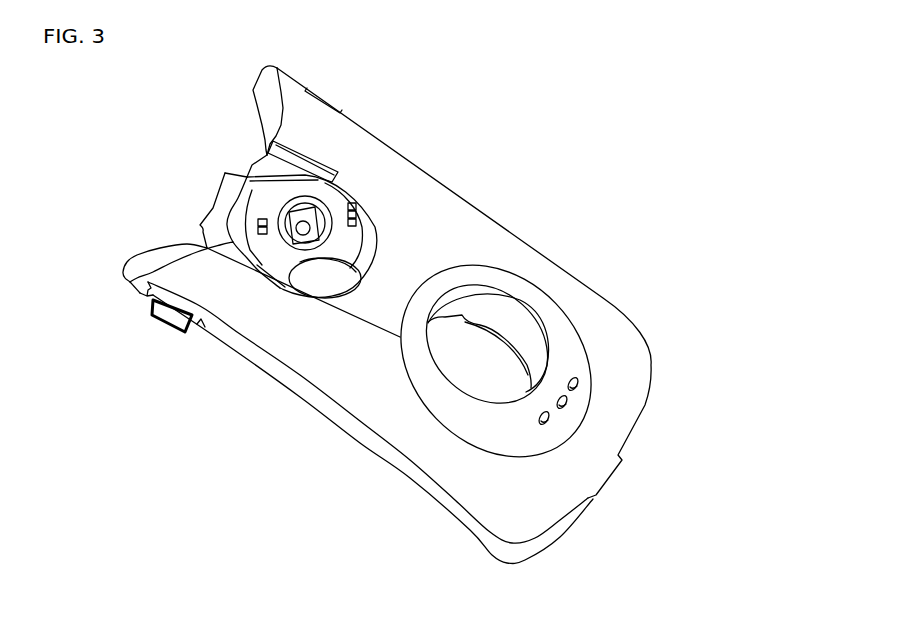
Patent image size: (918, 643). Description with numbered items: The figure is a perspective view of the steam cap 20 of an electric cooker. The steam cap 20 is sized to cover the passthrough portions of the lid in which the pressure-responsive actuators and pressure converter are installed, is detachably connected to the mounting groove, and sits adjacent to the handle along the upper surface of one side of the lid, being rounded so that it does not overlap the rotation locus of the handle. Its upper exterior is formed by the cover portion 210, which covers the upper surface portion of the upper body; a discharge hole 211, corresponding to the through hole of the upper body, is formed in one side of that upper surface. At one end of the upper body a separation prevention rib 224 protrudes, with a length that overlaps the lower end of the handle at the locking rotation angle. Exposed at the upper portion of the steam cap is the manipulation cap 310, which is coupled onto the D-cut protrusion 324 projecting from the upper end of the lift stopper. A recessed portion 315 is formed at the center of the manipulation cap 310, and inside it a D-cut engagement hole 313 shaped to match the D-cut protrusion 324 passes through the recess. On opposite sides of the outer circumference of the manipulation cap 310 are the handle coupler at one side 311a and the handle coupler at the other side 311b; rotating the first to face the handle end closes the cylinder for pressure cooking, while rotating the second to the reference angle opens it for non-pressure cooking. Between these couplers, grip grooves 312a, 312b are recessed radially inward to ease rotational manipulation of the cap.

The steam cap 20 is at (116, 101).
The cover portion 210 is at (568, 310).
The discharge hole 211 is at (577, 385).
The separation prevention rib 224 is at (213, 208).
The manipulation cap 310 is at (245, 177).
The handle coupler at one side 311a is at (146, 287).
The handle coupler at the other side 311b is at (378, 218).
The grip groove 312a is at (292, 178).
The grip groove 312b is at (317, 272).
The D-cut engagement hole 313 is at (300, 213).
The recessed portion 315 is at (317, 211).
The D-cut protrusion 324 is at (259, 195).